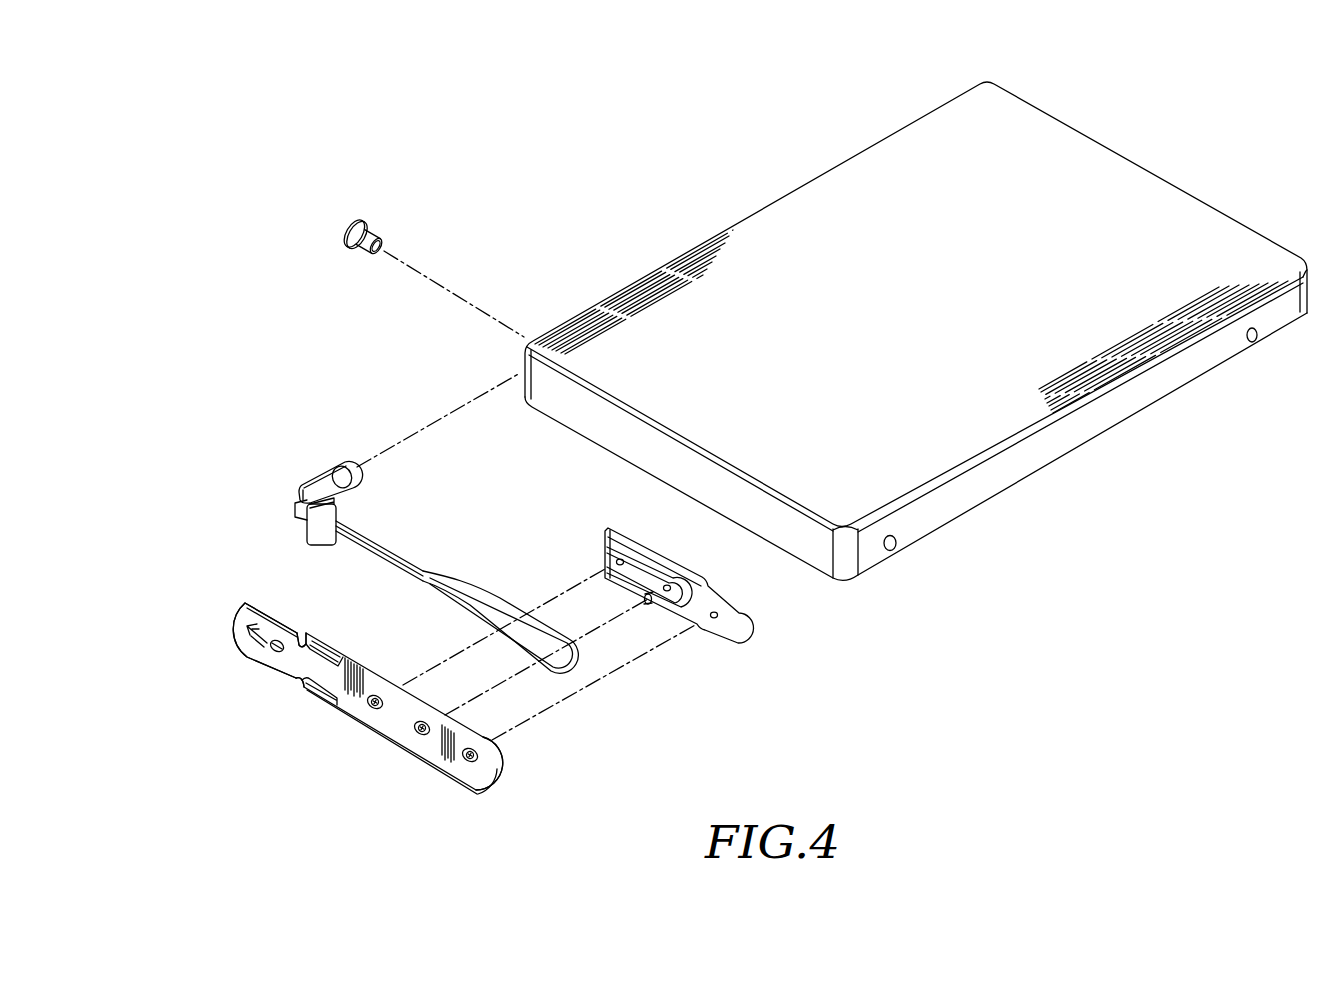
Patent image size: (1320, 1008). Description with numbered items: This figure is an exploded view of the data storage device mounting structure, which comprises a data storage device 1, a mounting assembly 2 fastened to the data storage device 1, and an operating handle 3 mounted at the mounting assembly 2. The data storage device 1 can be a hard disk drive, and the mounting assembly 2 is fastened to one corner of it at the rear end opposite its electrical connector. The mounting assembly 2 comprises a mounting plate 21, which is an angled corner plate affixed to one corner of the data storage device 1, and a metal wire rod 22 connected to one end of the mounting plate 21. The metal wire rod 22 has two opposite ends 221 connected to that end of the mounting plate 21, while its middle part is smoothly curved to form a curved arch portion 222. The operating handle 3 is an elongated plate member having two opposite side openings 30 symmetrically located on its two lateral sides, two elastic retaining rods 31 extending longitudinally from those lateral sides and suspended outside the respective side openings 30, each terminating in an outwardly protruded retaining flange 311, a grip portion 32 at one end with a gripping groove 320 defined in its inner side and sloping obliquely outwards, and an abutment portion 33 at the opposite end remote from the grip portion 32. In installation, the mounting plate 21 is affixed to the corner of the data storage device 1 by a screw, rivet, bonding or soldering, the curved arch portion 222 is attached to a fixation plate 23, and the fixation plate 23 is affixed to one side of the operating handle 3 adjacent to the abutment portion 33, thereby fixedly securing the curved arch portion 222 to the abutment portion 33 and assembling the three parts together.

The data storage device 1 is at (748, 238).
The mounting assembly 2 is at (318, 432).
The mounting plate 21 is at (326, 484).
The metal wire rod 22 is at (497, 639).
The opposite ends 221 is at (340, 523).
The curved arch portion 222 is at (572, 664).
The fixation plate 23 is at (740, 630).
The operating handle 3 is at (355, 687).
The side openings 30 is at (303, 631).
The elastic retaining rods 31 is at (331, 701).
The retaining flange 311 is at (303, 684).
The grip portion 32 is at (228, 604).
The gripping groove 320 is at (249, 597).
The abutment portion 33 is at (495, 766).